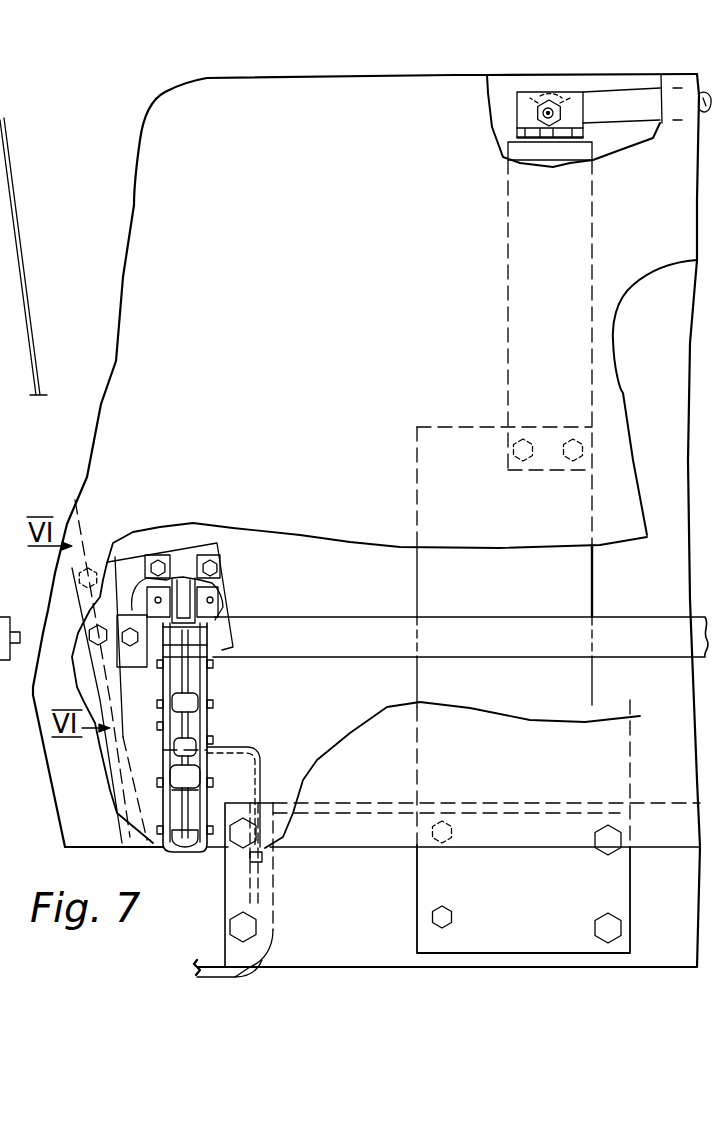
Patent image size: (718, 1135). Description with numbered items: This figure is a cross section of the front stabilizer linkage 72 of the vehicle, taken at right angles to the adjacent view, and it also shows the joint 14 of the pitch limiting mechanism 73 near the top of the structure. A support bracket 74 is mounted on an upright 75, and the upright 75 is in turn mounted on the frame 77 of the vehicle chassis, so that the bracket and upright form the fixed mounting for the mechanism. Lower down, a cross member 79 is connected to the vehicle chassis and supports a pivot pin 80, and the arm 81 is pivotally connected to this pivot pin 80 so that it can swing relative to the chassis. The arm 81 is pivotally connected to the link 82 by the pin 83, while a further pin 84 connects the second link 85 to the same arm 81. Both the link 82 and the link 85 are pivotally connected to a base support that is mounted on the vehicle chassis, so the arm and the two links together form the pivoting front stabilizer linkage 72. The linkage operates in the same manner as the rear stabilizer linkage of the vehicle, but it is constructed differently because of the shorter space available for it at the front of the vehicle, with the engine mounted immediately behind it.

The joint 14 is at (545, 115).
The front stabilizer linkage 72 is at (232, 679).
The pitch limiting mechanism 73 is at (634, 135).
The support bracket 74 is at (515, 226).
The upright 75 is at (586, 576).
The frame 77 is at (230, 875).
The cross member 79 is at (200, 612).
The pivot pin 80 is at (215, 636).
The arm 81 is at (163, 682).
The link 82 is at (187, 722).
The pin 83 is at (210, 703).
The pin 84 is at (230, 783).
The link 85 is at (177, 803).